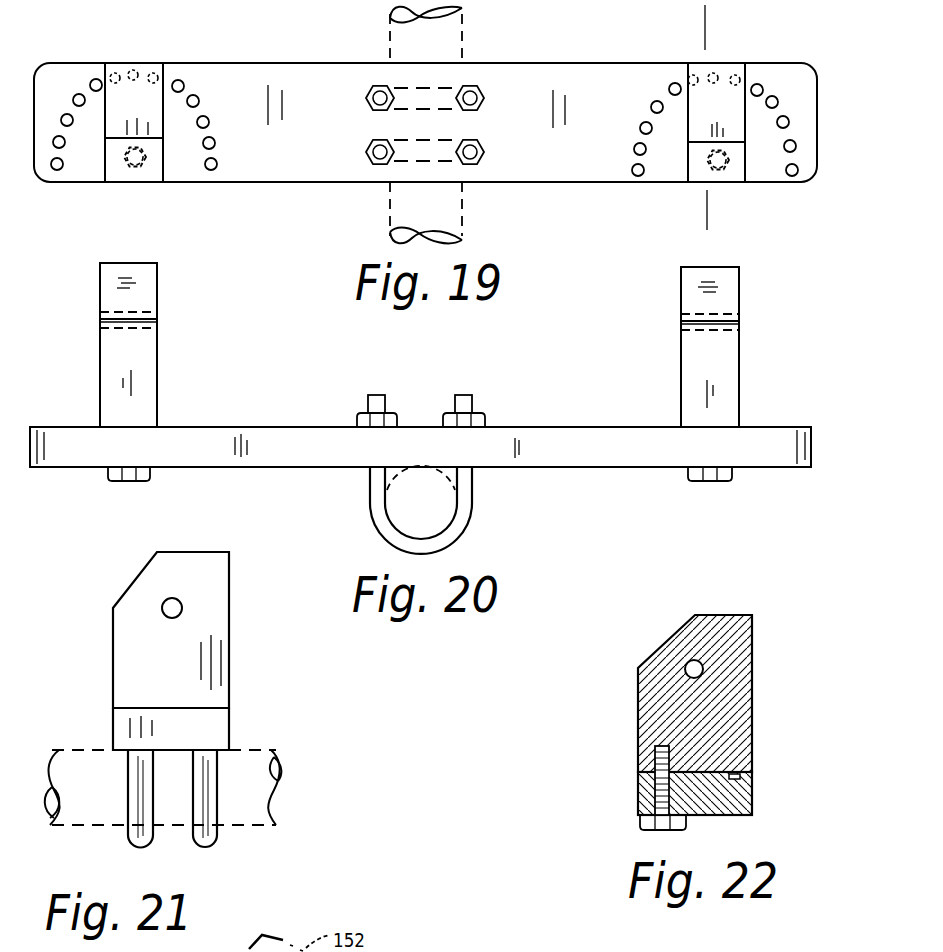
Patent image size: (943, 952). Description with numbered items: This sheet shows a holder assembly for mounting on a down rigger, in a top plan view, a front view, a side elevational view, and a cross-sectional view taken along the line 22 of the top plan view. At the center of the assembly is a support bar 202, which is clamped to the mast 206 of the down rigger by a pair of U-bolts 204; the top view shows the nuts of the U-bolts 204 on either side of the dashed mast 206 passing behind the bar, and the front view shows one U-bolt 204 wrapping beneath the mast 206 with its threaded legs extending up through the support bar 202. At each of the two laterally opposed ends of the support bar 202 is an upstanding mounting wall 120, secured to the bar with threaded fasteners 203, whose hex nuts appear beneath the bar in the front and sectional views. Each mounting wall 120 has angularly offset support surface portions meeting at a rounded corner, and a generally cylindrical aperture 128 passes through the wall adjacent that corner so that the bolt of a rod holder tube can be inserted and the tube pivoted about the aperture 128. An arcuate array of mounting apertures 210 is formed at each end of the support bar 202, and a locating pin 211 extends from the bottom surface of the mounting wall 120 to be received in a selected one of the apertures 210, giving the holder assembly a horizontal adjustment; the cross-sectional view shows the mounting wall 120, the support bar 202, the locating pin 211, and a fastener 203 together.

In FIG. 19, the upstanding mounting wall 120 is at (112, 56).
In FIG. 20, the upstanding mounting wall 120 is at (163, 299).
In FIG. 21, the upstanding mounting wall 120 is at (217, 570).
In FIG. 22, the upstanding mounting wall 120 is at (697, 614).
In FIG. 21, the aperture 128 is at (182, 616).
In FIG. 22, the aperture 128 is at (702, 675).
In FIG. 19, the support bar 202 is at (240, 85).
In FIG. 20, the support bar 202 is at (279, 437).
In FIG. 21, the support bar 202 is at (222, 733).
In FIG. 22, the support bar 202 is at (752, 798).
In FIG. 19, the threaded fasteners 203 is at (130, 167).
In FIG. 20, the threaded fasteners 203 is at (133, 483).
In FIG. 22, the threaded fasteners 203 is at (642, 835).
In FIG. 19, the U-bolts 204 is at (381, 138).
In FIG. 20, the U-bolts 204 is at (473, 502).
In FIG. 21, the U-bolts 204 is at (205, 843).
In FIG. 21, the mast 206 is at (287, 768).
In FIG. 19, the mounting apertures 210 is at (217, 160).
In FIG. 22, the mounting apertures 210 is at (745, 790).
In FIG. 22, the locating pin 211 is at (748, 755).
In FIG. 19, the section line 22 is at (672, 20).